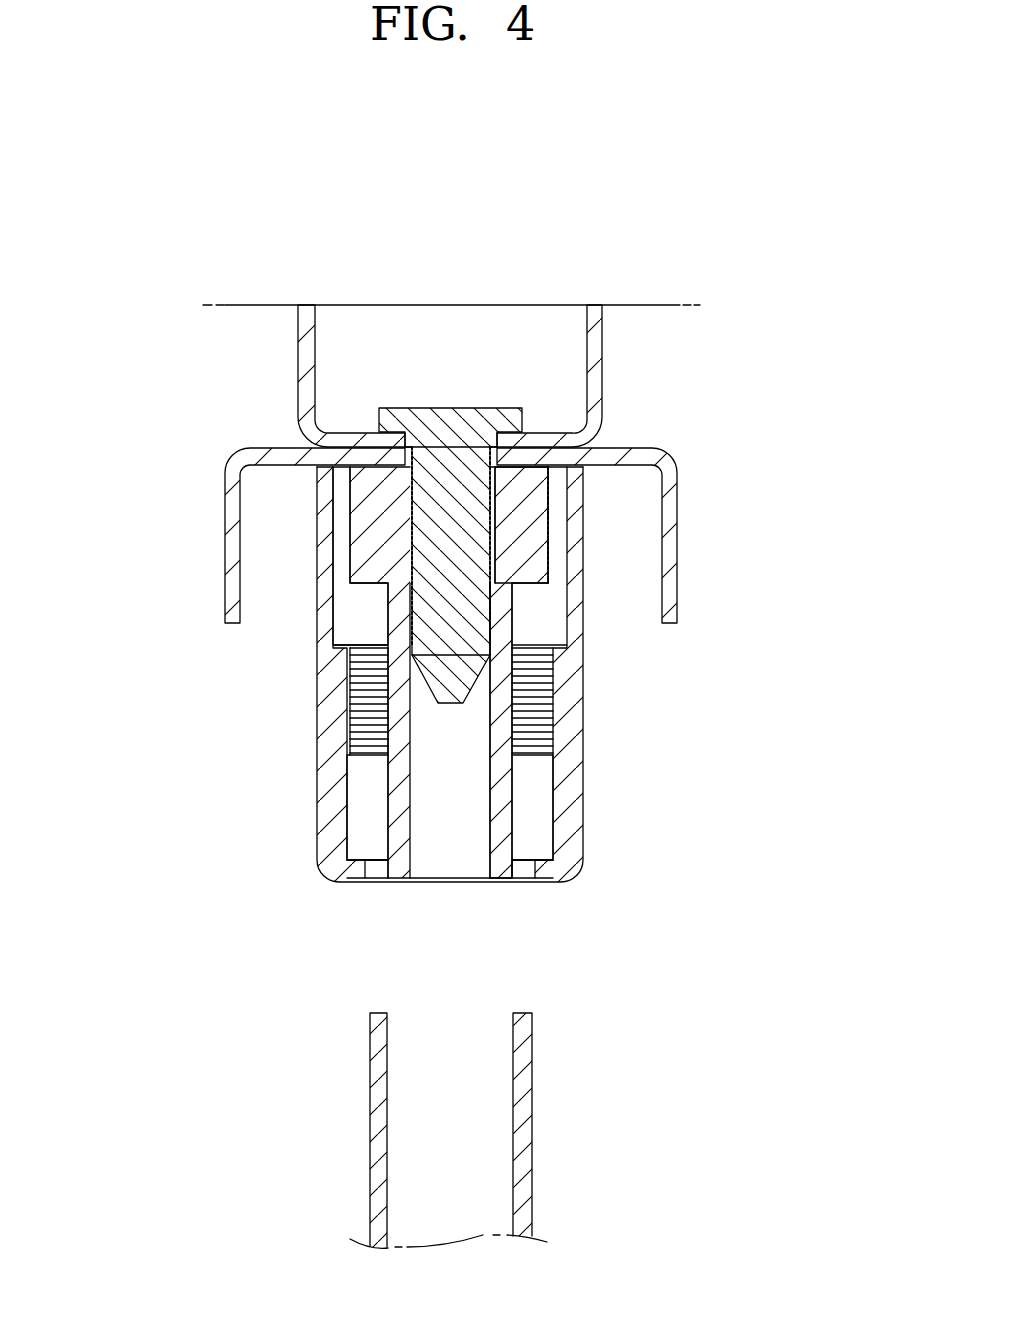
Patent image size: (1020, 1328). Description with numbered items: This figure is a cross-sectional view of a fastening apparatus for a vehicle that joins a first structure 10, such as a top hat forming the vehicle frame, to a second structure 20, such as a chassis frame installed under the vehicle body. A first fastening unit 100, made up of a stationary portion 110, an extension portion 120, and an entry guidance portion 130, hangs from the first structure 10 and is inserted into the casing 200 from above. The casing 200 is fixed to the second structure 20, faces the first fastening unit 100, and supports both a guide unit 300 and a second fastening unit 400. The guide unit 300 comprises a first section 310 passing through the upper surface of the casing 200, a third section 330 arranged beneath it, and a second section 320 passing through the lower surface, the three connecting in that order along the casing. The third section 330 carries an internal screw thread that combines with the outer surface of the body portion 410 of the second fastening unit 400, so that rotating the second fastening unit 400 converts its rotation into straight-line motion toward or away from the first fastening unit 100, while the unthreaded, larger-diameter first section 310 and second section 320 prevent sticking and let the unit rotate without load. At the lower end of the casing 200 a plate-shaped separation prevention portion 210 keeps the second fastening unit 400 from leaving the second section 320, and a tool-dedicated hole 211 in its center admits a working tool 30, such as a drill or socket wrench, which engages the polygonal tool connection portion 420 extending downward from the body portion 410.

The first structure 10 is at (593, 351).
The second structure 20 is at (668, 523).
The working tool 30 is at (527, 1124).
The first fastening unit 100 is at (306, 524).
The stationary portion 110 is at (380, 413).
The extension portion 120 is at (434, 667).
The entry guidance portion 130 is at (425, 522).
The casing 200 is at (396, 716).
The separation prevention portion 210 is at (358, 870).
The tool-dedicated hole 211 is at (517, 872).
The guide unit 300 is at (274, 663).
The first section 310 is at (360, 625).
The second section 320 is at (308, 807).
The third section 330 is at (366, 690).
The second fastening unit 400 is at (638, 672).
The body portion 410 is at (537, 545).
The tool connection portion 420 is at (500, 697).